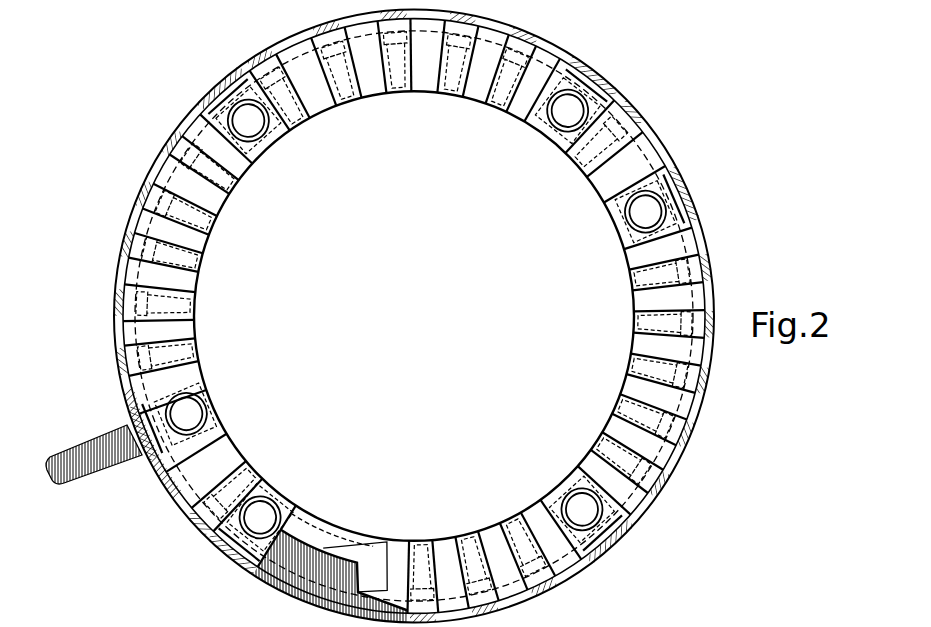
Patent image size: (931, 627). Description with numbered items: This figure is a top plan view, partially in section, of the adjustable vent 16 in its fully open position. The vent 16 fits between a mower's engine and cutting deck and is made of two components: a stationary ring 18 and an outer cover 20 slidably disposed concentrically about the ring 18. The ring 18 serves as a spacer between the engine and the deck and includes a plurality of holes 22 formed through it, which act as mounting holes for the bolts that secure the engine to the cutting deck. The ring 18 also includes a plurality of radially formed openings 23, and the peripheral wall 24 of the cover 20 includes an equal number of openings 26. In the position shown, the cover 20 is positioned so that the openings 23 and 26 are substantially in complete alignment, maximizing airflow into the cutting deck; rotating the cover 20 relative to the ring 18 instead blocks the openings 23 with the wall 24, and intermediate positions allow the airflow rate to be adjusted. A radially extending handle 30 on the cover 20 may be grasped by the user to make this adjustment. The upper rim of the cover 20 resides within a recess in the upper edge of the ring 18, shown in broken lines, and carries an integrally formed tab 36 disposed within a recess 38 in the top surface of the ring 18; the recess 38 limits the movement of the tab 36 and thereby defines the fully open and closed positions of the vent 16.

The adjustable vent 16 is at (624, 62).
The stationary ring 18 is at (414, 95).
The outer cover 20 is at (212, 535).
The holes 22 is at (250, 126).
The openings 23 is at (226, 193).
The peripheral wall 24 is at (700, 400).
The openings 26 is at (133, 212).
The handle 30 is at (68, 447).
The tab 36 is at (307, 547).
The recess 38 is at (357, 547).